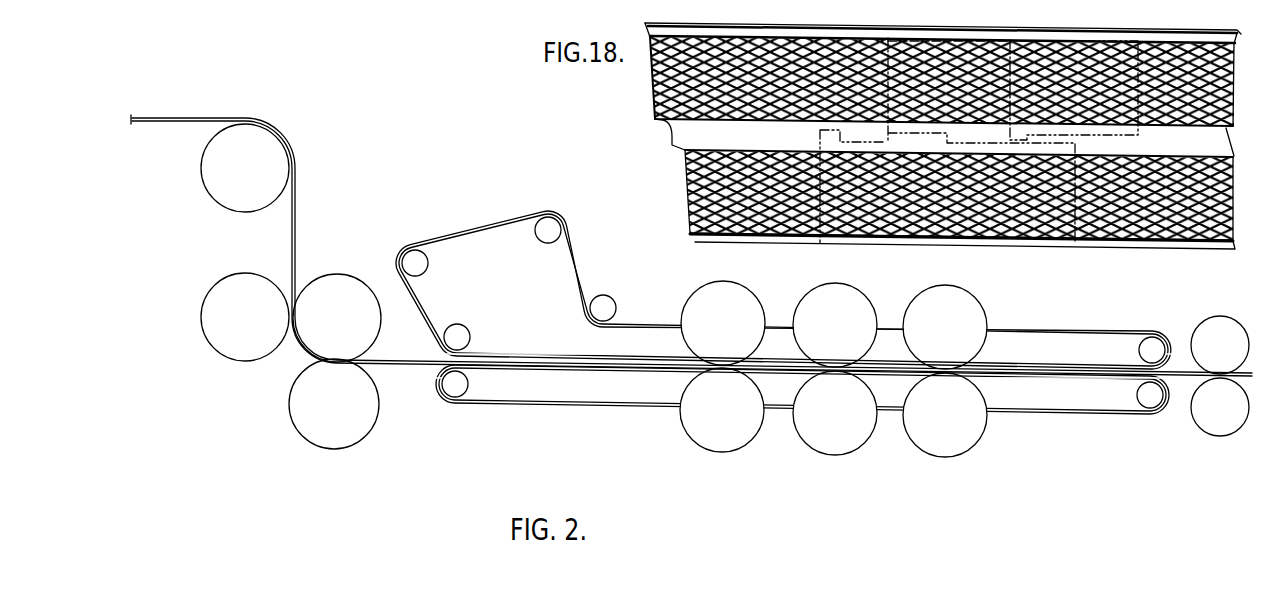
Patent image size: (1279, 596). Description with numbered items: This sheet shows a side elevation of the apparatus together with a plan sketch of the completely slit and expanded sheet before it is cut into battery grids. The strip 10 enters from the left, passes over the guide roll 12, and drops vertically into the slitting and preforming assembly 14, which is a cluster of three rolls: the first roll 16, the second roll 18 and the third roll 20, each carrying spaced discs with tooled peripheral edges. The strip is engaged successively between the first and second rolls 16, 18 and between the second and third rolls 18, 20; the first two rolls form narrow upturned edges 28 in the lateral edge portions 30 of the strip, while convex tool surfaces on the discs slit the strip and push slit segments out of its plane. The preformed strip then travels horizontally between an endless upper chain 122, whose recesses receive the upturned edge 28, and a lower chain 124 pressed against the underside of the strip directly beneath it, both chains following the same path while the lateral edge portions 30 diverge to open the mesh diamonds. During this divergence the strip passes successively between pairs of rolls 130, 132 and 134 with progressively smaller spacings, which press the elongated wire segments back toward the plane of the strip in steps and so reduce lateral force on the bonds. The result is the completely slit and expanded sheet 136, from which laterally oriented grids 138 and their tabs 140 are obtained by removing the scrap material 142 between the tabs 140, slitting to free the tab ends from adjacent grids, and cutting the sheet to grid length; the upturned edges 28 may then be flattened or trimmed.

In FIG. 2, the strip 10 is at (170, 118).
In FIG. 2, the guide roll 12 is at (270, 138).
In FIG. 2, the slitting and preforming assembly 14 is at (229, 267).
In FIG. 2, the first roll 16 is at (213, 311).
In FIG. 2, the second roll 18 is at (335, 283).
In FIG. 2, the third roll 20 is at (348, 428).
In FIG. 18, the upturned edges 28 is at (732, 244).
In FIG. 18, the lateral edge portions 30 is at (695, 233).
In FIG. 2, the upper chain 122 is at (456, 230).
In FIG. 2, the lower chain 124 is at (562, 402).
In FIG. 2, the roll 130 is at (690, 295).
In FIG. 2, the roll 132 is at (815, 295).
In FIG. 2, the roll 134 is at (990, 313).
In FIG. 18, the expanded sheet 136 is at (1091, 256).
In FIG. 18, the grids 138 is at (947, 87).
In FIG. 18, the tabs 140 is at (866, 133).
In FIG. 18, the scrap material 142 is at (992, 133).